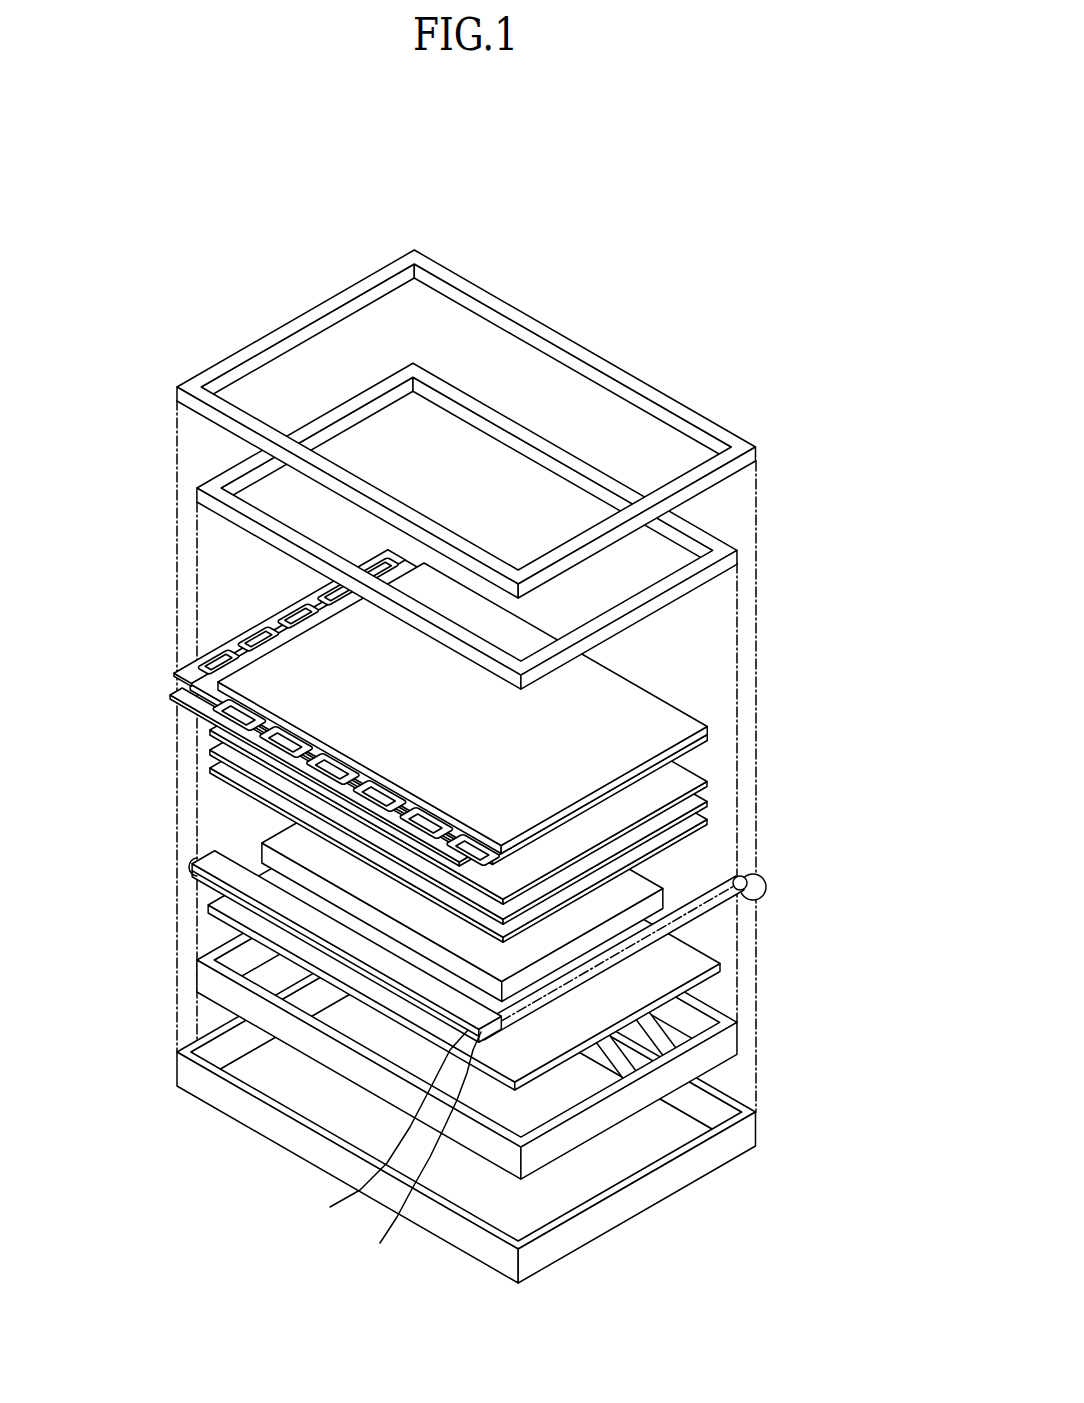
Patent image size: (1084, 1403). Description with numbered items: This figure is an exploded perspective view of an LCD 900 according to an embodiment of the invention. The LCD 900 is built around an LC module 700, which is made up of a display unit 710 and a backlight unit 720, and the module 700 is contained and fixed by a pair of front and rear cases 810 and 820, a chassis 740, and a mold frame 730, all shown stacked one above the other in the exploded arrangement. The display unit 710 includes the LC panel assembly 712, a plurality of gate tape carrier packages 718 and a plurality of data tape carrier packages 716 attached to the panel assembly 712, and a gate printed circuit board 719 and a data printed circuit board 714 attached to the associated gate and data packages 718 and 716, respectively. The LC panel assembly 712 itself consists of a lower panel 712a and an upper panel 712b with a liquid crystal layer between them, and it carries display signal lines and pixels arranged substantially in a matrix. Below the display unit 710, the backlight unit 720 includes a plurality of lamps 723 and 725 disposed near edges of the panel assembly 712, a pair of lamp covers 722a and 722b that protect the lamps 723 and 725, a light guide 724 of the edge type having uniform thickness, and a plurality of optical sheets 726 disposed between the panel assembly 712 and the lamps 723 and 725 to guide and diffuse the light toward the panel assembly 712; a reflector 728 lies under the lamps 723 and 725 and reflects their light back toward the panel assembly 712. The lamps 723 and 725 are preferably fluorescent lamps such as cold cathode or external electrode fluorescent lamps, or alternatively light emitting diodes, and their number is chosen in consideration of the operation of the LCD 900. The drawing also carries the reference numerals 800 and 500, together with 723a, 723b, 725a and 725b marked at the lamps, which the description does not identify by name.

The LCD 900 is at (500, 763).
The chassis assembly 800 is at (503, 766).
The front case 810 is at (513, 313).
The rear case 820 is at (633, 1197).
The frame member 500 is at (752, 513).
The chassis 740 is at (690, 582).
The LC module 700 is at (500, 771).
The display unit 710 is at (467, 708).
The LC panel assembly 712 is at (506, 712).
The lower panel 712a is at (708, 752).
The upper panel 712b is at (708, 730).
The data PCB 714 is at (184, 700).
The data TCPs 716 is at (176, 690).
The gate TCPs 718 is at (227, 643).
The gate PCB 719 is at (279, 617).
The backlight unit 720 is at (563, 895).
The lamp cover 722a is at (343, 957).
The lamp cover 722b is at (735, 875).
The lamp 723 is at (377, 1160).
The first lamp wire 723a is at (380, 1136).
The second lamp wire 723b is at (414, 1155).
The light guide 724 is at (652, 900).
The lamp 725 is at (681, 942).
The lamp tube 725a is at (748, 885).
The lamp electrode 725b is at (743, 892).
The optical sheets 726 is at (511, 777).
The reflector 728 is at (552, 1048).
The mold frame 730 is at (705, 1055).